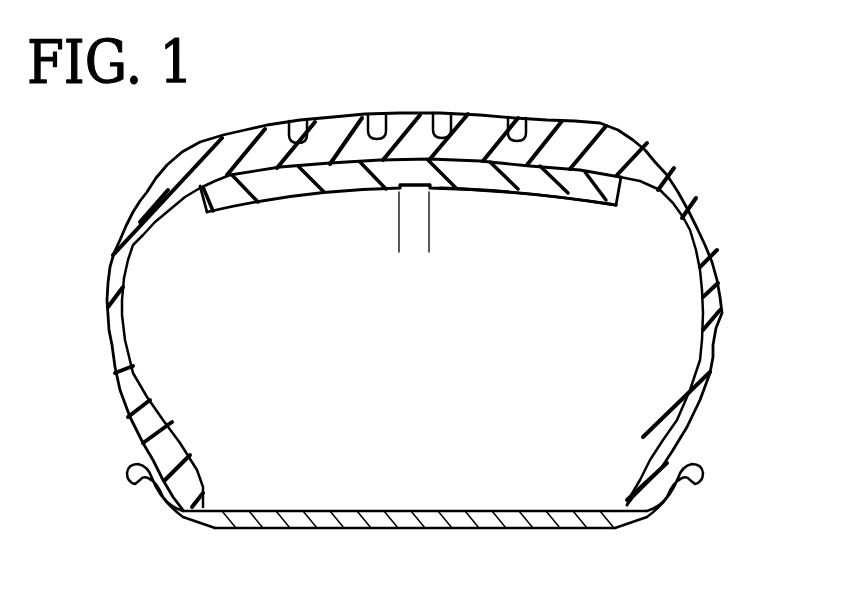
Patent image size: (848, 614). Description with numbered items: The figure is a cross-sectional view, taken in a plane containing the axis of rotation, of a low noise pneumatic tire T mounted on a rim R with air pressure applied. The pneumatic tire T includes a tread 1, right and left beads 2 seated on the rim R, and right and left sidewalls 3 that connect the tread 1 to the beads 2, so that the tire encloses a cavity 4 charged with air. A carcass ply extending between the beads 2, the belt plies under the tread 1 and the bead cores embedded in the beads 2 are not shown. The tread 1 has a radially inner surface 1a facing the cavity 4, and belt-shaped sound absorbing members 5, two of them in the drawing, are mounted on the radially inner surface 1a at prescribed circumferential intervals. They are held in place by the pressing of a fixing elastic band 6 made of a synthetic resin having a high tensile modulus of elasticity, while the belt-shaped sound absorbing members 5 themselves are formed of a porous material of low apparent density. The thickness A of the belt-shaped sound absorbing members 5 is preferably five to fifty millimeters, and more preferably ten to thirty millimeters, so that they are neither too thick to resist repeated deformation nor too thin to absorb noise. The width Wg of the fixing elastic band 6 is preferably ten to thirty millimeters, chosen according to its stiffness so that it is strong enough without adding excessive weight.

The tread 1 is at (424, 113).
The radially inner surface 1a is at (513, 192).
The beads 2 is at (129, 458).
The sidewalls 3 is at (98, 308).
The cavity 4 is at (406, 384).
The belt-shaped sound absorbing members 5 is at (303, 188).
The fixing elastic band 6 is at (430, 190).
The rim R is at (380, 530).
The pneumatic tire T is at (666, 111).
The thickness A is at (358, 142).
The width Wg is at (452, 248).